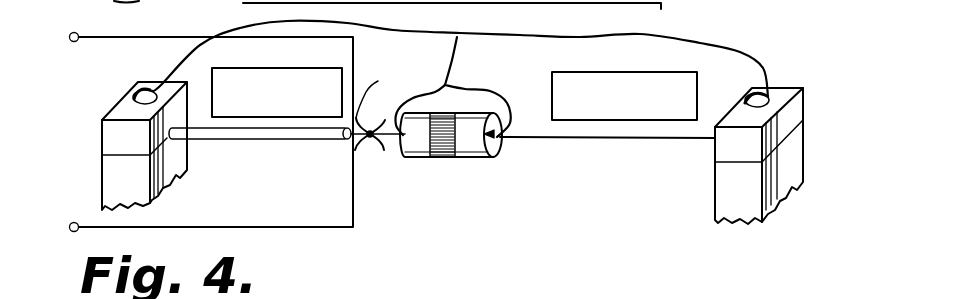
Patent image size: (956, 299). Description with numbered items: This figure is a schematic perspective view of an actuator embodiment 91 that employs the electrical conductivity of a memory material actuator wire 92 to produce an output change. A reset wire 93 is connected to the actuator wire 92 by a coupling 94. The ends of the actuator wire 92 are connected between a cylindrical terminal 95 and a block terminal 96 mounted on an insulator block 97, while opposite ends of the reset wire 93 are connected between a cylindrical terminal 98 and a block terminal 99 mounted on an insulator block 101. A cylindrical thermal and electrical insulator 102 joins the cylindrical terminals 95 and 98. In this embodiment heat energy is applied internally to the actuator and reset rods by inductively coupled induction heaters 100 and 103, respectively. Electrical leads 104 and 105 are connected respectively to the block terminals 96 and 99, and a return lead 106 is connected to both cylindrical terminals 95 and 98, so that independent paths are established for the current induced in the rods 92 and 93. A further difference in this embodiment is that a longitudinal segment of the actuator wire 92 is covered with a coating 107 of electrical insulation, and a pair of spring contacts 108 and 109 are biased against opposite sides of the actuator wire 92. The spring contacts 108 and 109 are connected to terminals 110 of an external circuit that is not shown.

The actuator embodiment 91 is at (227, 165).
The memory material actuator wire 92 is at (384, 150).
The reset wire 93 is at (596, 138).
The coupling 94 is at (501, 174).
The cylindrical terminal 95 is at (427, 157).
The block terminal 96 is at (176, 130).
The insulator block 97 is at (191, 160).
The cylindrical terminal 98 is at (488, 158).
The block terminal 99 is at (755, 156).
The induction heater 100 is at (263, 68).
The insulator block 101 is at (804, 148).
The cylindrical thermal and electrical insulator 102 is at (448, 158).
The induction heater 103 is at (610, 72).
The electrical lead 104 is at (400, 31).
The electrical lead 105 is at (757, 57).
The return lead 106 is at (452, 62).
The coating of electrical insulation 107 is at (271, 141).
The spring contact 108 is at (355, 193).
The spring contact 109 is at (388, 89).
The terminals 110 is at (74, 42).